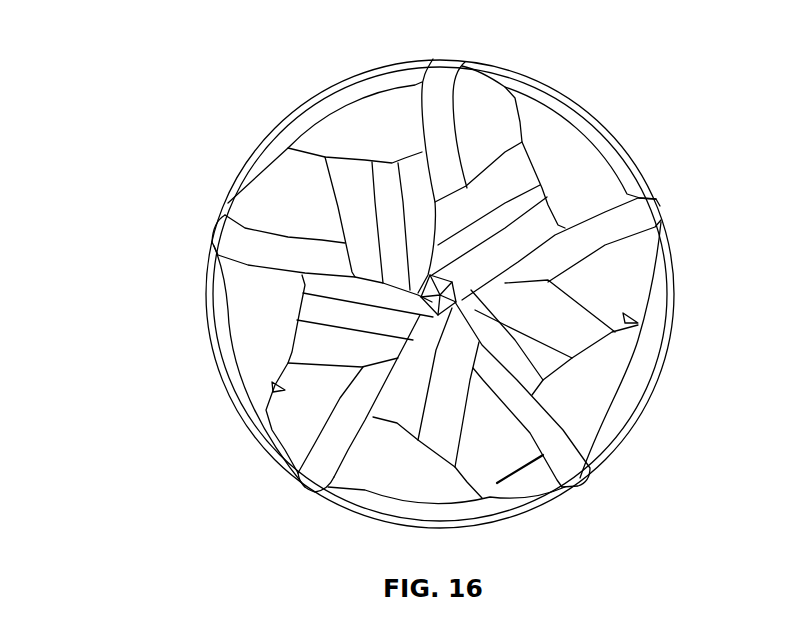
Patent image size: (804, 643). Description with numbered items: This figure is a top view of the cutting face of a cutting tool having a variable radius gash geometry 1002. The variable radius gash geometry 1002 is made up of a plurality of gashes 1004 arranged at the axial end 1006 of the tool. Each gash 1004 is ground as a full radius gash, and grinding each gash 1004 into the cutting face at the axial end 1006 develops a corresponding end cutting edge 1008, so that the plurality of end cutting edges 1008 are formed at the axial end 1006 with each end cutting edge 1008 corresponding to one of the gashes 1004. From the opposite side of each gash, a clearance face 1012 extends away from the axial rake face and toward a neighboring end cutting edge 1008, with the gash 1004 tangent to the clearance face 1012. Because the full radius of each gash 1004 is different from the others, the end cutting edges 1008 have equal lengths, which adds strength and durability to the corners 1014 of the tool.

The variable radius gash geometry 1002 is at (146, 165).
The gash 1004 is at (372, 127).
The axial end 1006 is at (145, 250).
The end cutting edge 1008 is at (422, 135).
The clearance face 1012 is at (335, 347).
The corner 1014 is at (298, 497).